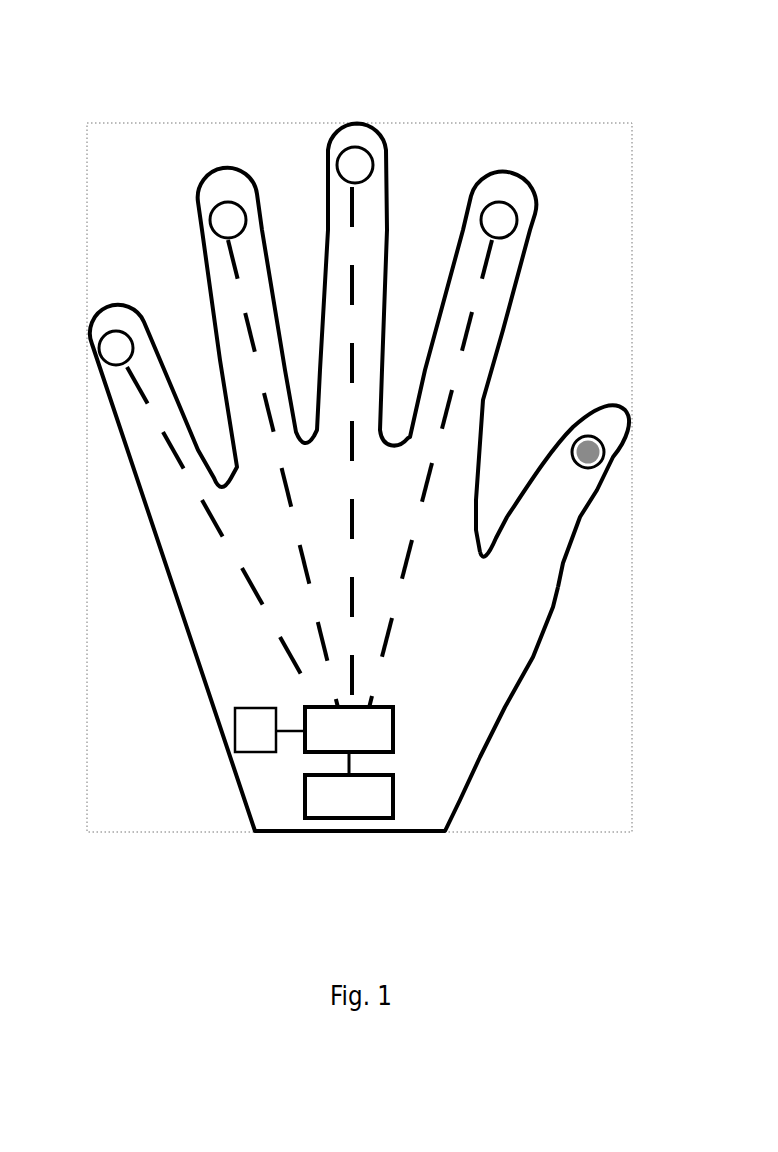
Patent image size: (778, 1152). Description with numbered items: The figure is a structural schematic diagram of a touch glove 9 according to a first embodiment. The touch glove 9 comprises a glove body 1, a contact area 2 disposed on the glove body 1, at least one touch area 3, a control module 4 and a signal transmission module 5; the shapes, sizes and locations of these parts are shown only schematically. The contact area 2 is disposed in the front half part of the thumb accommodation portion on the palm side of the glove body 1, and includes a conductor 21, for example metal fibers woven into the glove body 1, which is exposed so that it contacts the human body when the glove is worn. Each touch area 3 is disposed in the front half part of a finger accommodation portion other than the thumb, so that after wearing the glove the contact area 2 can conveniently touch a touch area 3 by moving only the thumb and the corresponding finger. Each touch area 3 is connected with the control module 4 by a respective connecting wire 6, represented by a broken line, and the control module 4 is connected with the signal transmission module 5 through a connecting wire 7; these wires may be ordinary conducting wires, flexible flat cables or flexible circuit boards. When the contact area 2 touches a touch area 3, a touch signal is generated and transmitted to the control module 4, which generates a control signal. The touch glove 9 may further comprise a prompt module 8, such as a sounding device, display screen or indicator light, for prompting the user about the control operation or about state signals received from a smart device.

The glove body 1 is at (510, 647).
The contact area 2 is at (581, 432).
The conductor 21 is at (606, 455).
The touch area 3 is at (112, 355).
The control module 4 is at (378, 728).
The signal transmission module 5 is at (375, 797).
The connecting wire 6 is at (245, 580).
The connecting wire 7 is at (343, 760).
The prompt module 8 is at (243, 723).
The touch glove 9 is at (342, 420).